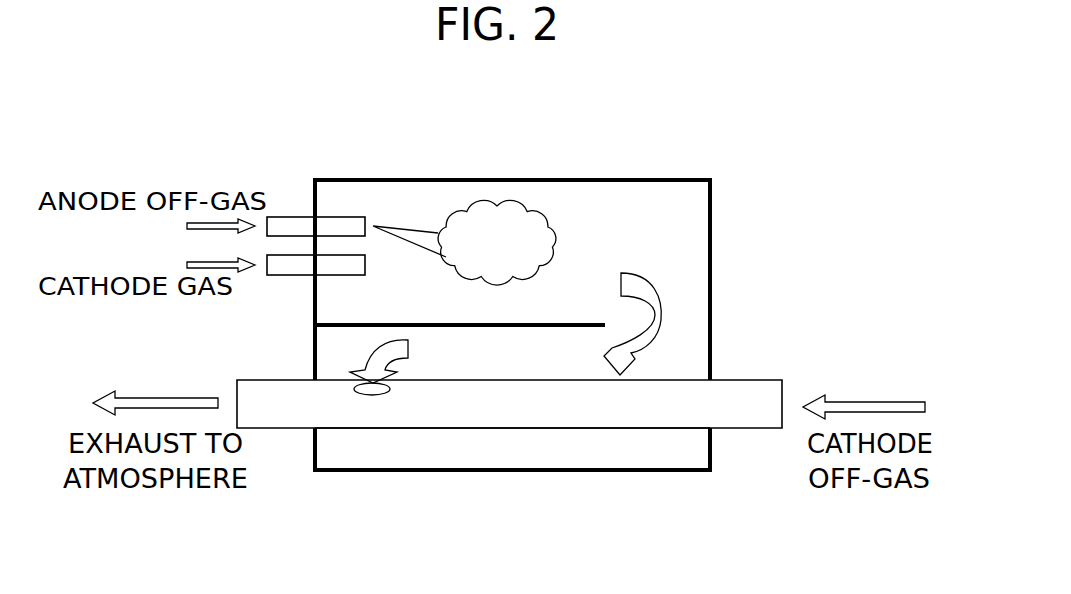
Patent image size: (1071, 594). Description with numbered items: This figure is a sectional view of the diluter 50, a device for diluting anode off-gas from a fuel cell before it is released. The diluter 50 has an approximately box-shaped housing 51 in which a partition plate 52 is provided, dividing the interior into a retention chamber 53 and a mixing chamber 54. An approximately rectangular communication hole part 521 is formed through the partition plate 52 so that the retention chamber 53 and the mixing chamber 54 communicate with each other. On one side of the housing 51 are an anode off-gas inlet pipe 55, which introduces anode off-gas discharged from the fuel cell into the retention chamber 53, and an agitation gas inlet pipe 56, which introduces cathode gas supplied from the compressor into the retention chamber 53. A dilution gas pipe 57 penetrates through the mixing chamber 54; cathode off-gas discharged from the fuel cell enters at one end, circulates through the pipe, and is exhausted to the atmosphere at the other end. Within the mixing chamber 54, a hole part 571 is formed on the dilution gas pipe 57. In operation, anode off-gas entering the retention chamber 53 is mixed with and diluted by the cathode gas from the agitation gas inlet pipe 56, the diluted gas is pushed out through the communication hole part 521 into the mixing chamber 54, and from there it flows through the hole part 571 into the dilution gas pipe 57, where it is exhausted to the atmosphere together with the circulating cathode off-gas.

The diluter 50 is at (532, 318).
The housing 51 is at (570, 178).
The partition plate 52 is at (541, 323).
The communication hole part 521 is at (680, 317).
The retention chamber 53 is at (527, 202).
The mixing chamber 54 is at (545, 442).
The anode off-gas inlet pipe 55 is at (283, 212).
The agitation gas inlet pipe 56 is at (283, 278).
The dilution gas pipe 57 is at (746, 432).
The hole part 571 is at (373, 395).